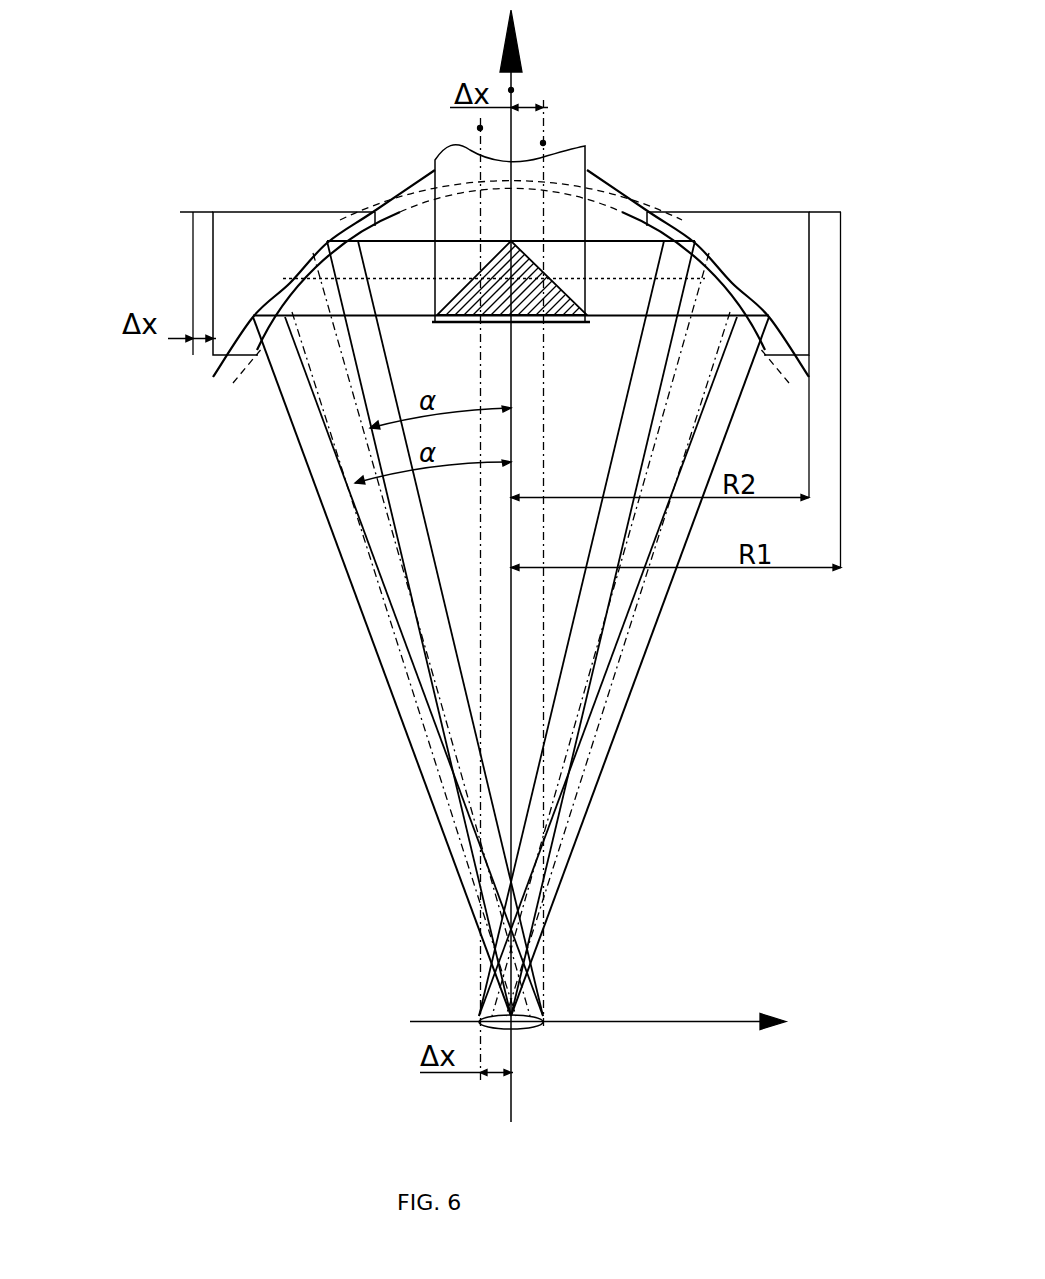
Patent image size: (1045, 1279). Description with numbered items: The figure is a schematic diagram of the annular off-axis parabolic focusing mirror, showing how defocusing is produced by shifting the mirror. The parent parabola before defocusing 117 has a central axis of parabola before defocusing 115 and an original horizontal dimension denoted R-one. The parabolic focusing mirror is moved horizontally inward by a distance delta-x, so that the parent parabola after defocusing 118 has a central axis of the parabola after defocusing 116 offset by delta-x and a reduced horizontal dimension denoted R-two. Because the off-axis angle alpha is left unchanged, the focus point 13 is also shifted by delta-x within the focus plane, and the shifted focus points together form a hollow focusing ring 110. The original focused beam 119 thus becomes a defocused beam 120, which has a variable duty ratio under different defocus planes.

The central axis of parabola before defocusing 115 is at (650, 561).
The central axis of the parabola after defocusing 116 is at (543, 143).
The parent parabola before defocusing 117 is at (426, 250).
The parent parabola after defocusing 118 is at (406, 269).
The original focused beam 119 is at (454, 666).
The defocused beam 120 is at (436, 628).
The focusing ring 110 is at (589, 1047).
The focus point 13 is at (611, 1071).